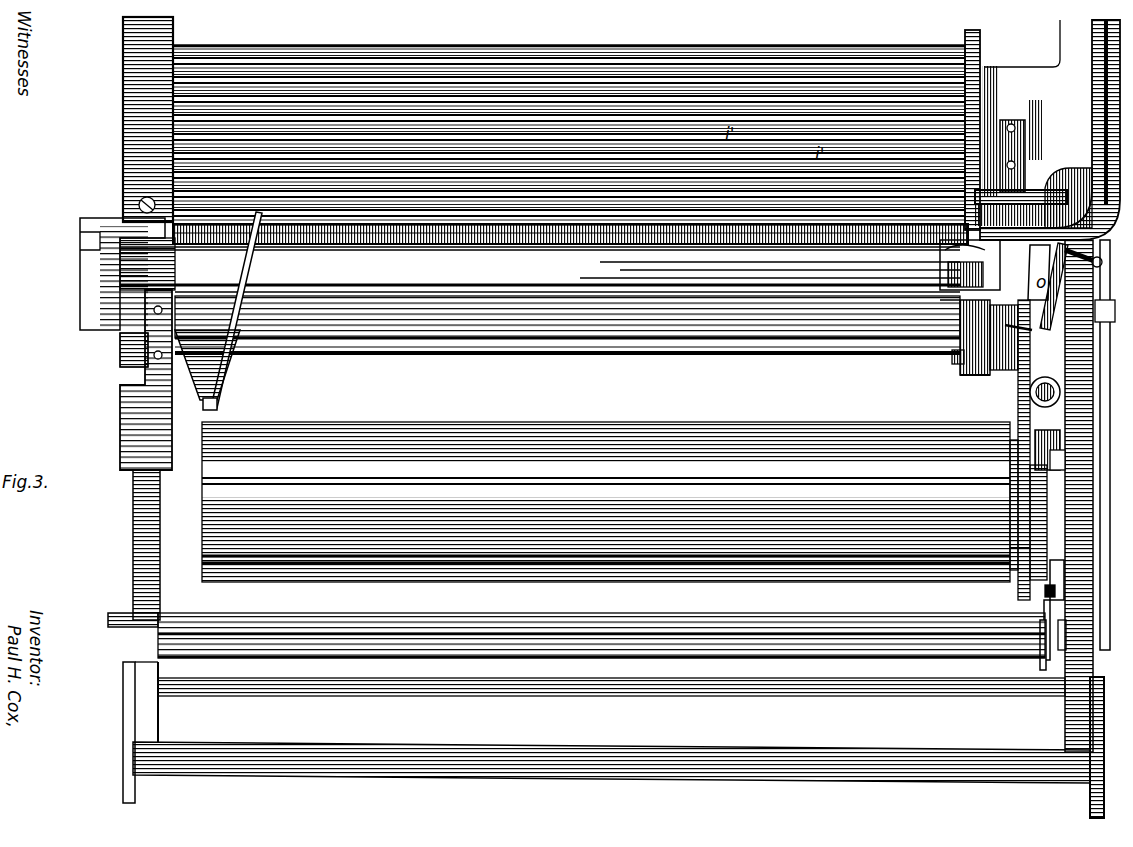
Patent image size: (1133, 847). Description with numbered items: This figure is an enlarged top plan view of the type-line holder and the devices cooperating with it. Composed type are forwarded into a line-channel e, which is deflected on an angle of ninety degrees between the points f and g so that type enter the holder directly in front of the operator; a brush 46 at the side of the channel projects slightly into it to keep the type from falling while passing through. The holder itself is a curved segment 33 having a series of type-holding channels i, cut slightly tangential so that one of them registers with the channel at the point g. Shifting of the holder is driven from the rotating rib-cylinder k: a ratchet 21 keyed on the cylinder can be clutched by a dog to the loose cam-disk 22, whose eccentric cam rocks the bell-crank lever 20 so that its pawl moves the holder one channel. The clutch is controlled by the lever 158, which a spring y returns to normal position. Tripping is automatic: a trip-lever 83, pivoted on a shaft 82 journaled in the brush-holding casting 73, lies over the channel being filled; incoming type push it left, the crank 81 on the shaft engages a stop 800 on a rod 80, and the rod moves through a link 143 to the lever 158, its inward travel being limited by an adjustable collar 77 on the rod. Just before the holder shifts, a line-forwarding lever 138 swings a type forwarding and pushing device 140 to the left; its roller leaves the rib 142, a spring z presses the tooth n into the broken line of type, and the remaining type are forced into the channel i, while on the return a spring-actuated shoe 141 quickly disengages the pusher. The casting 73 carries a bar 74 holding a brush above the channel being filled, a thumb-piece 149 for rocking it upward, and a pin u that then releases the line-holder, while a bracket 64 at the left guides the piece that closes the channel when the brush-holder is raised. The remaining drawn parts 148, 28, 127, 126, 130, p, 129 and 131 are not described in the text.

The curved segment 33 is at (641, 50).
The type-holding channels i is at (853, 64).
The line-channel e is at (1093, 90).
The brush 46 is at (1022, 192).
The deflection point f is at (1068, 198).
The deflection point g is at (960, 225).
The tooth n is at (970, 262).
The rib 142 is at (1048, 286).
The type forwarding and pushing device 140 is at (1095, 258).
The spring z is at (1104, 266).
The lever 138 is at (1114, 445).
The bar 74 is at (540, 264).
The bracket 64 is at (100, 301).
The stop 800 is at (187, 380).
The brush-holding casting 73 is at (567, 315).
The rod 80 is at (586, 358).
The trip-lever 83 is at (249, 310).
The crank 81 is at (220, 375).
The shaft 82 is at (222, 407).
The thumb-piece 149 is at (120, 432).
The rib-cylinder k is at (773, 434).
The pin u is at (960, 327).
The spring-actuated shoe 141 is at (960, 305).
The pin 148 is at (1015, 340).
The adjustable collar 77 is at (950, 358).
The plate 28 is at (990, 378).
The link 143 is at (1018, 400).
The lever 158 is at (1020, 420).
The spring y is at (1055, 448).
The bell-crank lever 20 is at (1092, 465).
The cam-disk 22 is at (1010, 502).
The ratchet 21 is at (1010, 551).
The pawl 127 is at (1088, 570).
The stud 126 is at (1088, 598).
The rod 130 is at (1042, 614).
The post p is at (1088, 630).
The rod 129 is at (1040, 645).
The base bar 131 is at (601, 635).